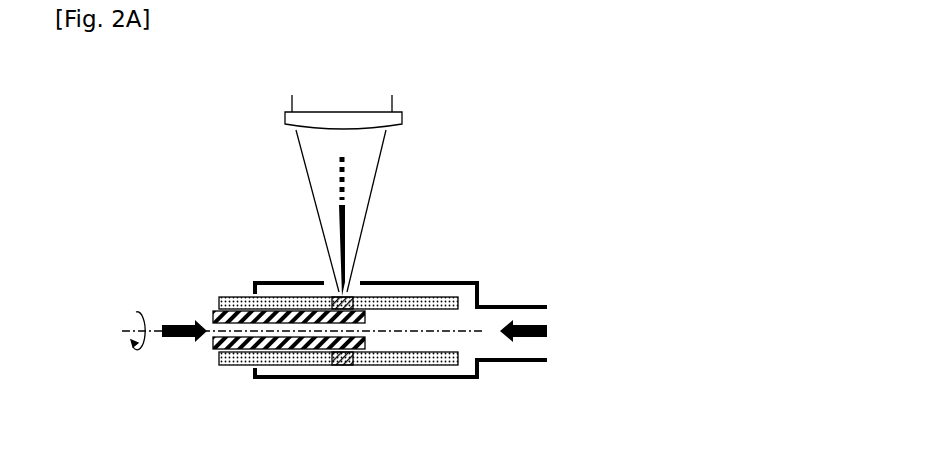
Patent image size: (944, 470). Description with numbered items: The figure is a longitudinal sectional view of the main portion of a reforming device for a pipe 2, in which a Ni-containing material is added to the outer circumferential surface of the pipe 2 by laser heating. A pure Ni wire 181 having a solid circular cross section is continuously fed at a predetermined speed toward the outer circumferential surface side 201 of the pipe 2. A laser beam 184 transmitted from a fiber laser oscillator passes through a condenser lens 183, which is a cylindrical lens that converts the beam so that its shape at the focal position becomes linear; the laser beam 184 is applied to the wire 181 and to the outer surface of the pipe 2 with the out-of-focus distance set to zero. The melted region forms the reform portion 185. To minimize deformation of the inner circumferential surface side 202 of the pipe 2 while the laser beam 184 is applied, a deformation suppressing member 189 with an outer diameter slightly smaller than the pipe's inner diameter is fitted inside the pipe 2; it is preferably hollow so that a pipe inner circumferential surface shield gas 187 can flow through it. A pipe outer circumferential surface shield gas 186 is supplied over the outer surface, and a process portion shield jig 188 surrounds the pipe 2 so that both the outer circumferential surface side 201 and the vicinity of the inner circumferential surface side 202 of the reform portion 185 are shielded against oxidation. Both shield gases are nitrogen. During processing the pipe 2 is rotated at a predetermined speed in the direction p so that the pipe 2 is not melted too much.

The pipe 2 is at (467, 362).
The wire 181 is at (340, 227).
The condenser lens 183 is at (368, 122).
The laser beam 184 is at (367, 167).
The reform portion 185 is at (337, 365).
The pipe outer circumferential surface shield gas 186 is at (547, 325).
The pipe inner circumferential surface shield gas 187 is at (178, 337).
The process portion shield jig 188 is at (457, 282).
The deformation suppressing member 189 is at (238, 352).
The outer circumferential surface side 201 is at (393, 298).
The inner circumferential surface side 202 is at (408, 312).